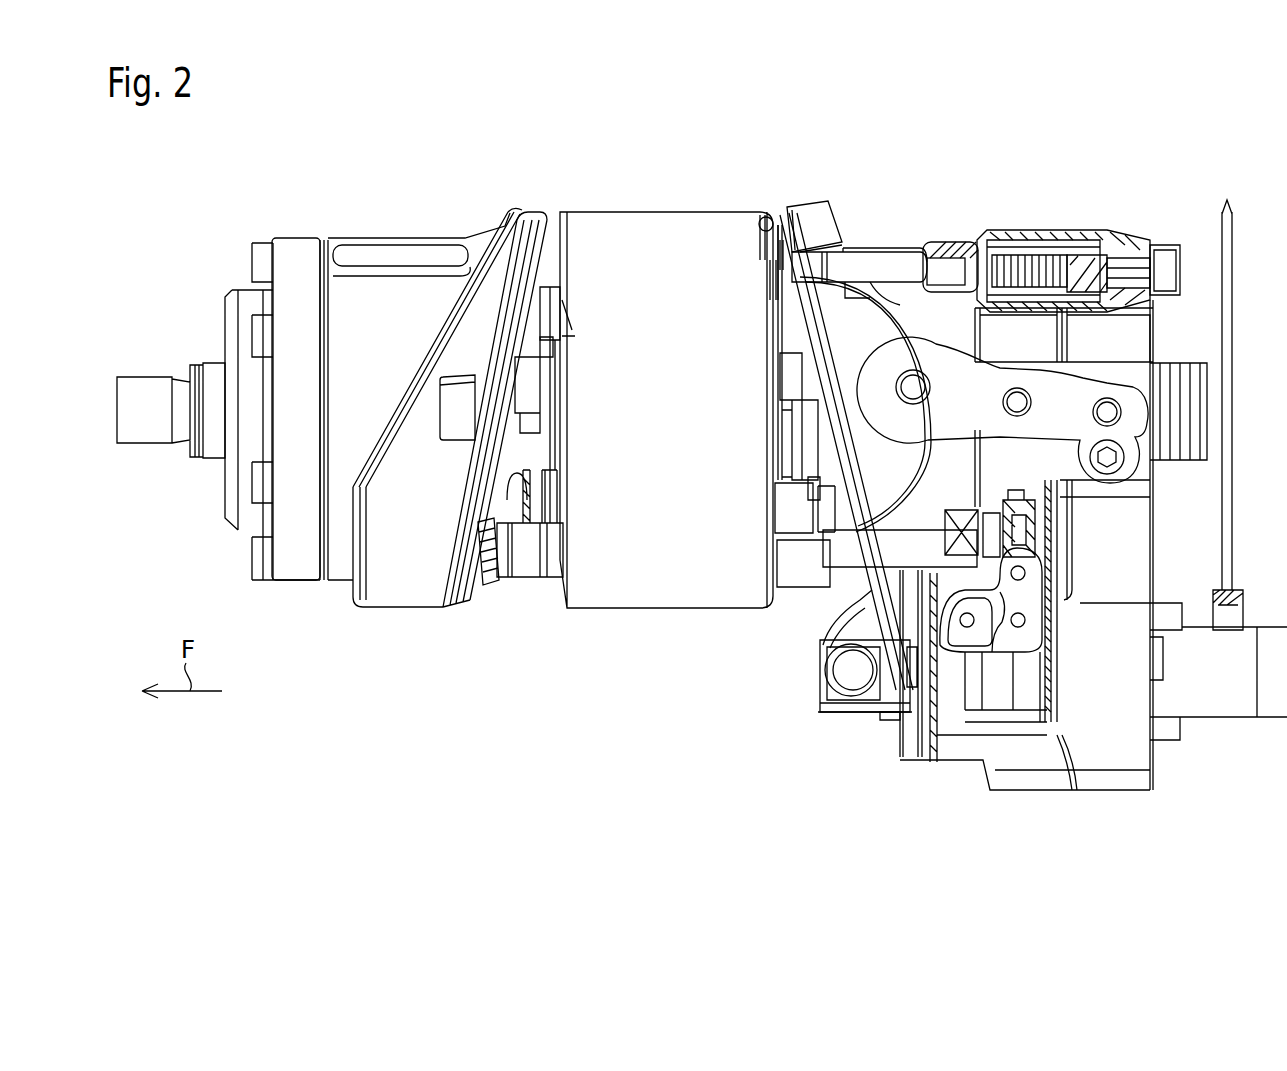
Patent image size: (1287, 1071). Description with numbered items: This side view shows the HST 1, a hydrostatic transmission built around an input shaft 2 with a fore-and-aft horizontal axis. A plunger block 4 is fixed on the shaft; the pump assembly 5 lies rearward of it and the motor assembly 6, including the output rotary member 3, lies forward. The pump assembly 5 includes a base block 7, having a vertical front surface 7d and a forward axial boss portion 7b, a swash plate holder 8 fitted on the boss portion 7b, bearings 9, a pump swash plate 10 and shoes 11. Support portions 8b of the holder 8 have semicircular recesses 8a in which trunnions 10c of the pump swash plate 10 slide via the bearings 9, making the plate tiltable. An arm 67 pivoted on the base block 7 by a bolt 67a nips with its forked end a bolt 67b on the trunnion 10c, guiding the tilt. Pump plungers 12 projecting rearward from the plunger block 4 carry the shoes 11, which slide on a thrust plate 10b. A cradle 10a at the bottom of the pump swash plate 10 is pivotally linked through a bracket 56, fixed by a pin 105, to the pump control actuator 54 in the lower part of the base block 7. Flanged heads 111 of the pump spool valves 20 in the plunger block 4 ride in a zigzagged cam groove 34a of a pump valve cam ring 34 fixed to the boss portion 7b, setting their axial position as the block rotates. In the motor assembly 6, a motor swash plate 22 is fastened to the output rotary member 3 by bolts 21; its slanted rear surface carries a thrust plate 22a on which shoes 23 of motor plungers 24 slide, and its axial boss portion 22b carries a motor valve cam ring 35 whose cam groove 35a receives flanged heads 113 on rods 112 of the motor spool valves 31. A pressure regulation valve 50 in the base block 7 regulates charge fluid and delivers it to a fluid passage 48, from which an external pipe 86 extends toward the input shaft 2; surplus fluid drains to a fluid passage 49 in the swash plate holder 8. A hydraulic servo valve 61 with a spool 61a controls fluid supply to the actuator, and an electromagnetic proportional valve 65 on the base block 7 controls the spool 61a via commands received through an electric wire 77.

The HST 1 is at (1203, 174).
The input shaft 2 is at (146, 377).
The output rotary member 3 is at (240, 290).
The plunger block 4 is at (655, 640).
The pump assembly 5 is at (983, 790).
The motor assembly 6 is at (393, 634).
The base block 7 is at (1090, 216).
The axial boss portion 7b is at (820, 437).
The vertical front surface 7d is at (1012, 236).
The swash plate holder 8 is at (938, 228).
The recesses 8a is at (852, 305).
The support portions 8b is at (966, 490).
The bearings 9 is at (900, 300).
The pump swash plate 10 is at (817, 200).
The cradle 10a is at (850, 677).
The thrust plate 10b is at (762, 215).
The trunnions 10c is at (847, 262).
The shoes 11 is at (866, 578).
The pump plungers 12 is at (790, 600).
The pump spool valves 20 is at (773, 290).
The bolts 21 is at (265, 240).
The motor swash plate 22 is at (399, 226).
The thrust plate 22a is at (475, 503).
The axial boss portion 22b is at (500, 362).
The shoes 23 is at (478, 582).
The motor plungers 24 is at (521, 582).
The motor spool valves 31 is at (552, 582).
The pump valve cam ring 34 is at (773, 300).
The cam groove 34a is at (773, 305).
The motor valve cam ring 35 is at (560, 337).
The cam groove 35a is at (515, 343).
The fluid passage 48 is at (1131, 252).
The fluid passage 49 is at (948, 257).
The pressure regulation valve 50 is at (1155, 262).
The pump control actuator 54 is at (921, 776).
The bracket 56 is at (834, 718).
The hydraulic servo valve 61 is at (1077, 533).
The spool 61a is at (1040, 540).
The electromagnetic proportional valve 65 is at (1266, 614).
The arms 67 is at (1077, 387).
The bolts 67a is at (1097, 416).
The bolts 67b is at (930, 388).
The electric wire 77 is at (1233, 285).
The external pipe 86 is at (1176, 245).
The pin 105 is at (890, 722).
The flanged heads 111 is at (773, 280).
The rods 112 is at (567, 582).
The flanged heads 113 is at (524, 565).